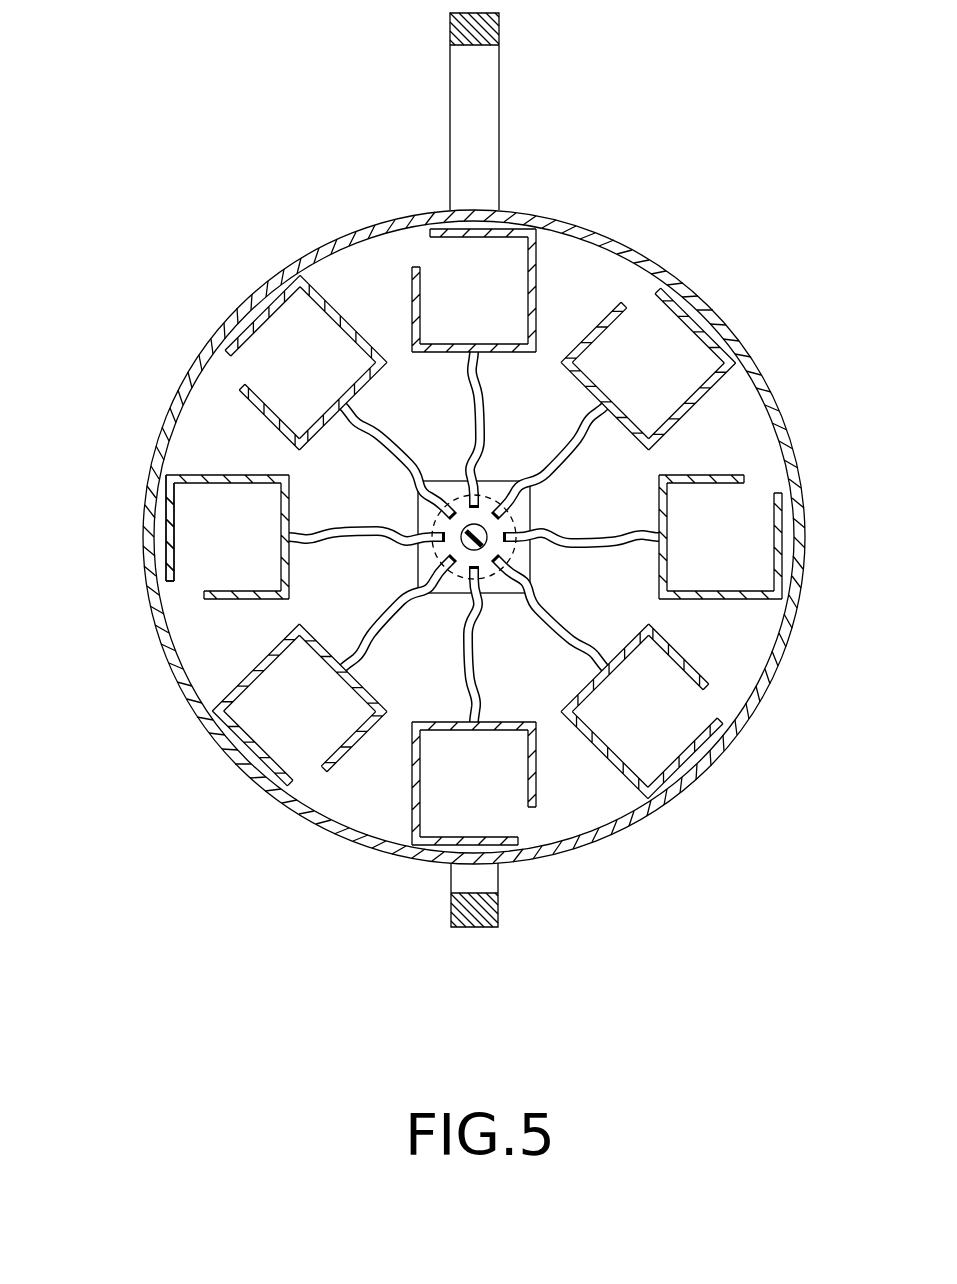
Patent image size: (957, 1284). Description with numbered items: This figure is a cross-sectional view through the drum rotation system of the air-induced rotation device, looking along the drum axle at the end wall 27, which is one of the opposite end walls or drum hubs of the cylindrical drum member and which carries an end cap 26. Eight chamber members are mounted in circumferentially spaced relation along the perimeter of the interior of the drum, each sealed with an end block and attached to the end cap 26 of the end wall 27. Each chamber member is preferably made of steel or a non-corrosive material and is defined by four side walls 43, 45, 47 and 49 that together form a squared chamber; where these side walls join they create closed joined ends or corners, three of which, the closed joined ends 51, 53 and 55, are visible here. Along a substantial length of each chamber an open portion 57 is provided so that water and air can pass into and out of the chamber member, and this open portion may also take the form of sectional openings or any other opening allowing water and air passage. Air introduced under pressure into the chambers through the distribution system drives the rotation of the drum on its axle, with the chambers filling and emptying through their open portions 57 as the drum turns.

The end cap 26 is at (733, 477).
The end wall 27 is at (697, 300).
The side wall 43 is at (487, 233).
The side wall 45 is at (537, 283).
The side wall 47 is at (520, 353).
The side wall 49 is at (412, 280).
The closed joined end 51 is at (163, 478).
The closed joined end 53 is at (285, 470).
The closed joined end 55 is at (208, 600).
The open portion 57 is at (173, 592).